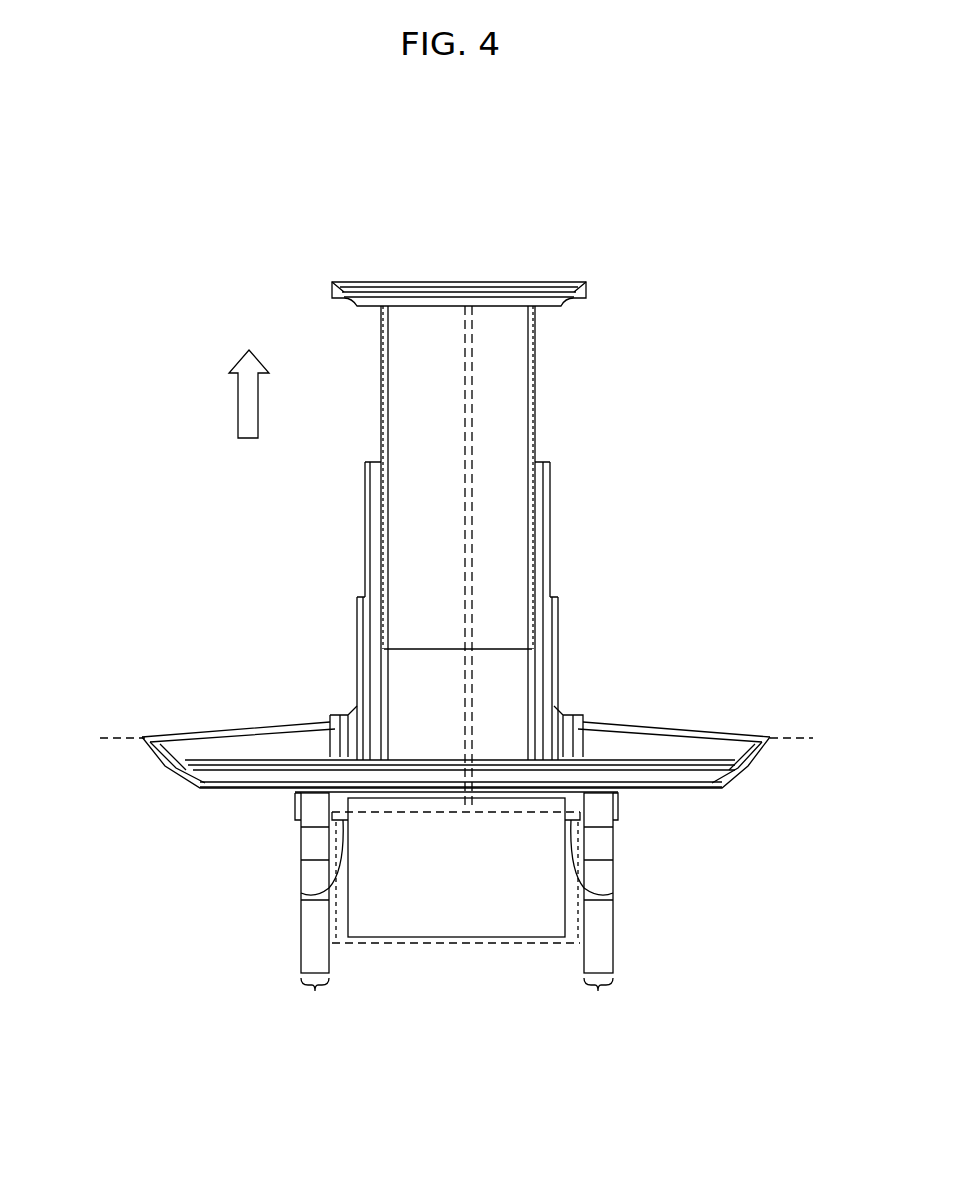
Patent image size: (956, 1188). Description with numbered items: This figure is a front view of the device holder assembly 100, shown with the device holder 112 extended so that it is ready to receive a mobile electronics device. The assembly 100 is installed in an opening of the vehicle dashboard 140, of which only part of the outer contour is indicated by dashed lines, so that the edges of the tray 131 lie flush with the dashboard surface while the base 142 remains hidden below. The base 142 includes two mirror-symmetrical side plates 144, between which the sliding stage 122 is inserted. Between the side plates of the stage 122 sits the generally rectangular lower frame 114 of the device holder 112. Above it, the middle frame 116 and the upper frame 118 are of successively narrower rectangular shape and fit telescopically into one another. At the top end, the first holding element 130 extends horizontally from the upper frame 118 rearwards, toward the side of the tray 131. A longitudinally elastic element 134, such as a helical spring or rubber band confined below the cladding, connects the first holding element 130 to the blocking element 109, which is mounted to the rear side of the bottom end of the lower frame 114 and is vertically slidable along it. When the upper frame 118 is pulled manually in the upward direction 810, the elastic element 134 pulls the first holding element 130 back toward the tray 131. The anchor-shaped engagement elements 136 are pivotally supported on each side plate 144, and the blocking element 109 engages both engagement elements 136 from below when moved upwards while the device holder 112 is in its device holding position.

The device holder assembly 100 is at (238, 246).
The upward direction 810 is at (237, 420).
The first holding element 130 is at (513, 280).
The upper frame 118 is at (538, 360).
The middle frame 116 is at (551, 480).
The lower frame 114 is at (558, 628).
The device holder 112 is at (510, 555).
The longitudinally elastic element 134 is at (465, 519).
The vehicle dashboard 140 is at (105, 737).
The tray 131 is at (233, 723).
The sliding stage 122 is at (340, 715).
The base 142 is at (301, 953).
The side plates 144 is at (458, 1000).
The blocking element 109 is at (397, 945).
The engagement elements 136 is at (301, 893).